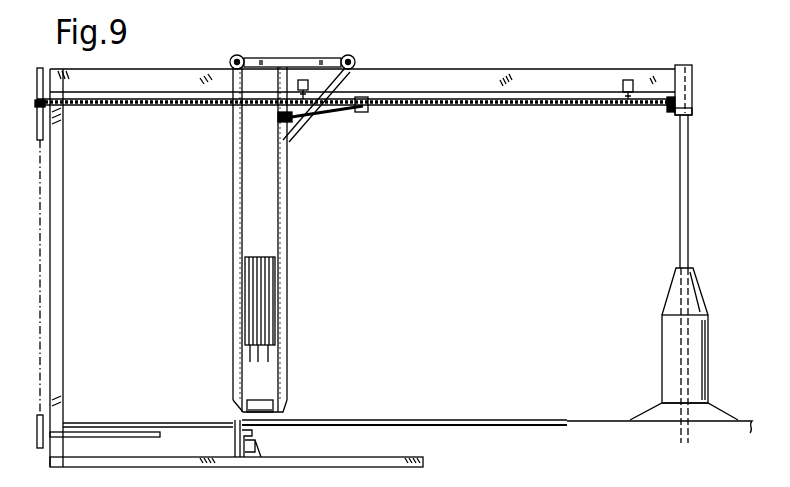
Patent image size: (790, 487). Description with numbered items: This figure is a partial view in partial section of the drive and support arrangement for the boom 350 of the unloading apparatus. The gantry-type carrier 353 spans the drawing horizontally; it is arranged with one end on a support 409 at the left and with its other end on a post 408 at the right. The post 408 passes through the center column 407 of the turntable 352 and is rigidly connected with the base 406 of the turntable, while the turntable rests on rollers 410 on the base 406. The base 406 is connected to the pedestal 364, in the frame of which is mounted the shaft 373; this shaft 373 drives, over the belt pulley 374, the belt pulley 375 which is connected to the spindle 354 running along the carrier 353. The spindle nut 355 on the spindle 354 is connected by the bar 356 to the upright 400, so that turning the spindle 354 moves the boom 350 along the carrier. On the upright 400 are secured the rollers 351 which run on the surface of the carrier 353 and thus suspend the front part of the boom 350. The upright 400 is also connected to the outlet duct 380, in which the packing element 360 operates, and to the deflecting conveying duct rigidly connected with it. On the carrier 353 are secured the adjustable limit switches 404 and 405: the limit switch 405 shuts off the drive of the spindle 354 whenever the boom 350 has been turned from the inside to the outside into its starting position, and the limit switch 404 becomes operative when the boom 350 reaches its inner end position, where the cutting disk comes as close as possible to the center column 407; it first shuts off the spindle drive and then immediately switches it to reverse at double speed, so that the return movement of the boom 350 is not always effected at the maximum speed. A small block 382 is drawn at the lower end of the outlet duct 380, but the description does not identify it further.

The boom 350 is at (224, 252).
The rollers 351 is at (230, 60).
The turntable 352 is at (424, 420).
The gantry-type carrier 353 is at (518, 78).
The spindle 354 is at (470, 106).
The spindle nut 355 is at (367, 110).
The bar 356 is at (322, 122).
The packing element 360 is at (270, 315).
The pedestal 364 is at (103, 423).
The shaft 373 is at (158, 432).
The belt pulley 374 is at (40, 415).
The belt pulley 375 is at (43, 133).
The outlet duct 380 is at (252, 372).
The bottom block 382 is at (265, 402).
The upright 400 is at (233, 198).
The limit switch 404 is at (628, 80).
The limit switch 405 is at (305, 80).
The base 406 is at (340, 466).
The center column 407 is at (662, 351).
The post 408 is at (680, 199).
The support 409 is at (62, 283).
The rollers 410 is at (244, 445).